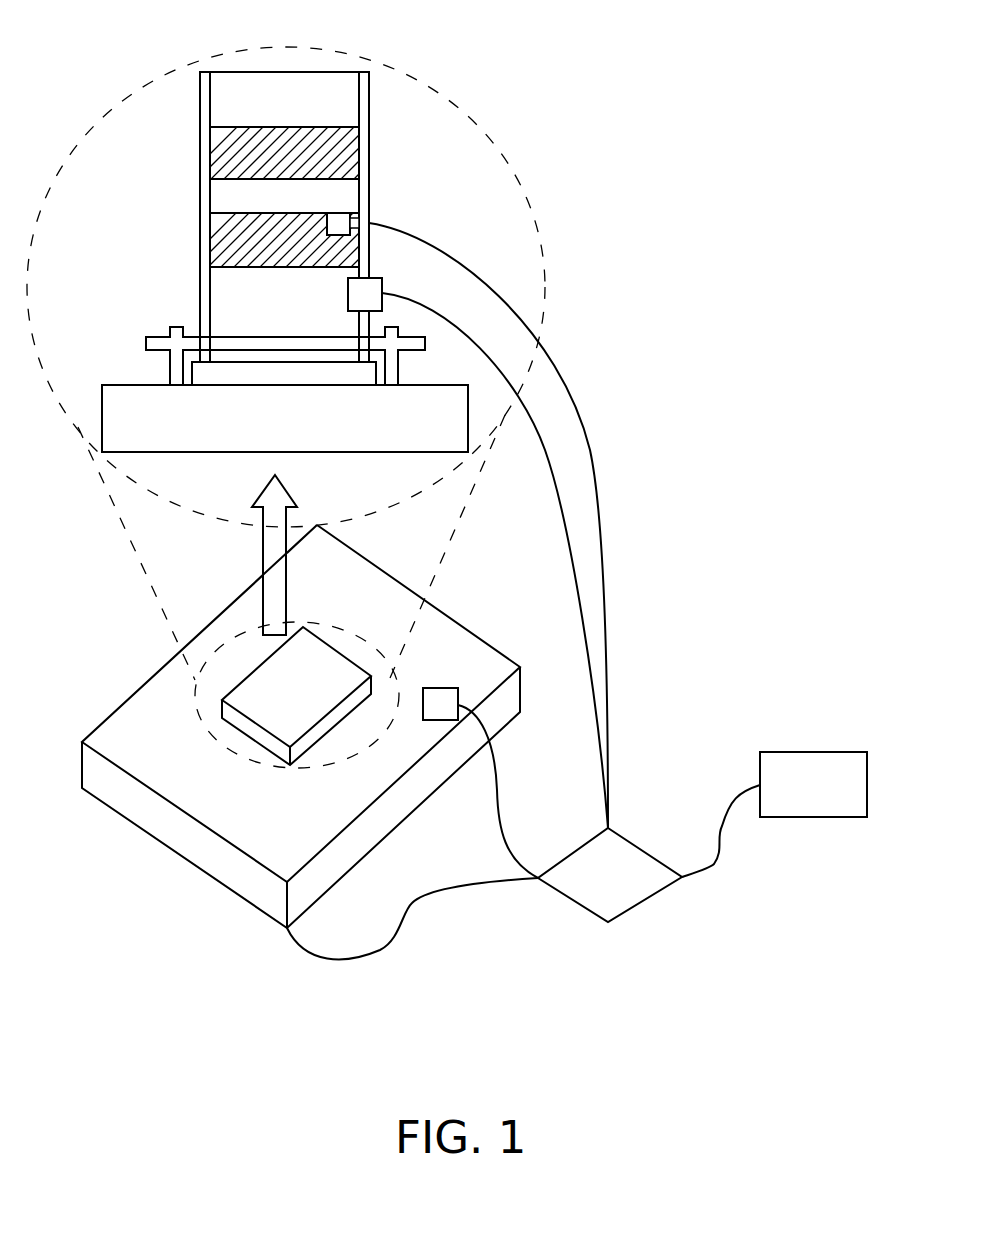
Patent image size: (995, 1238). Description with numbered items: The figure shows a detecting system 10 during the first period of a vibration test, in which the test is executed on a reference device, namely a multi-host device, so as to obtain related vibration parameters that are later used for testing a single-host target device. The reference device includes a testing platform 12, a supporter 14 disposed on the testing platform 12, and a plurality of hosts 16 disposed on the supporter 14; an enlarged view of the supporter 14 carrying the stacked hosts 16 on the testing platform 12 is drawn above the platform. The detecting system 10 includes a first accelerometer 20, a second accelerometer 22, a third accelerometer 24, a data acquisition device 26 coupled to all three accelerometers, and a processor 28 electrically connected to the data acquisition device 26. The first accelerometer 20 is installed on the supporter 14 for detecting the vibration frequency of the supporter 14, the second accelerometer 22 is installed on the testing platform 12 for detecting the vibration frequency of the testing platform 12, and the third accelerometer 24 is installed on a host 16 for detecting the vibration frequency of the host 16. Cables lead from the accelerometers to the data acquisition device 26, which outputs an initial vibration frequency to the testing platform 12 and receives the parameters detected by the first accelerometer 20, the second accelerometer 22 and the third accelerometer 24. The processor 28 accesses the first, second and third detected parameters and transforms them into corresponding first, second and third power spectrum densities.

The detecting system 10 is at (719, 522).
The testing platform 12 is at (156, 429).
The supporter 14 is at (208, 243).
The host 16 is at (293, 252).
The first accelerometer 20 is at (372, 283).
The second accelerometer 22 is at (446, 700).
The third accelerometer 24 is at (341, 221).
The data acquisition device 26 is at (645, 900).
The processor 28 is at (811, 752).